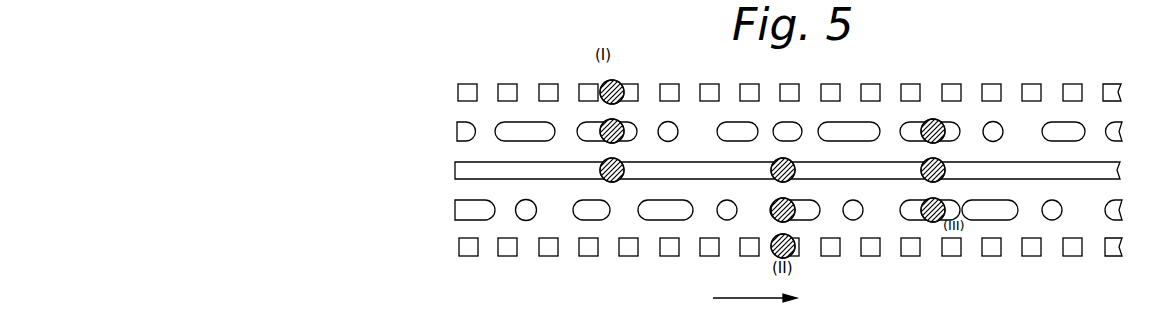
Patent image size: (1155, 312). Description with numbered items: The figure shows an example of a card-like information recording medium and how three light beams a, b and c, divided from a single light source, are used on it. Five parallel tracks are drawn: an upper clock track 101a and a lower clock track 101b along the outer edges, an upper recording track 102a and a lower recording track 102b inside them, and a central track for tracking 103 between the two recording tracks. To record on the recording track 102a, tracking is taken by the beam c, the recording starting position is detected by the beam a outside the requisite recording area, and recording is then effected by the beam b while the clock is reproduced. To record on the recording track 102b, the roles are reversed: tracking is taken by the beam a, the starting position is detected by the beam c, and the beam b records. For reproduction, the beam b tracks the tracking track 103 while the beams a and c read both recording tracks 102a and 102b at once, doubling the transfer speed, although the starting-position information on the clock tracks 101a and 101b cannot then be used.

The clock track 101a is at (447, 80).
The recording track 102a is at (447, 118).
The track for tracking 103 is at (447, 158).
The recording track 102b is at (447, 196).
The clock track 101b is at (447, 234).
The light beam a is at (618, 82).
The light beam b is at (619, 121).
The light beam c is at (619, 160).